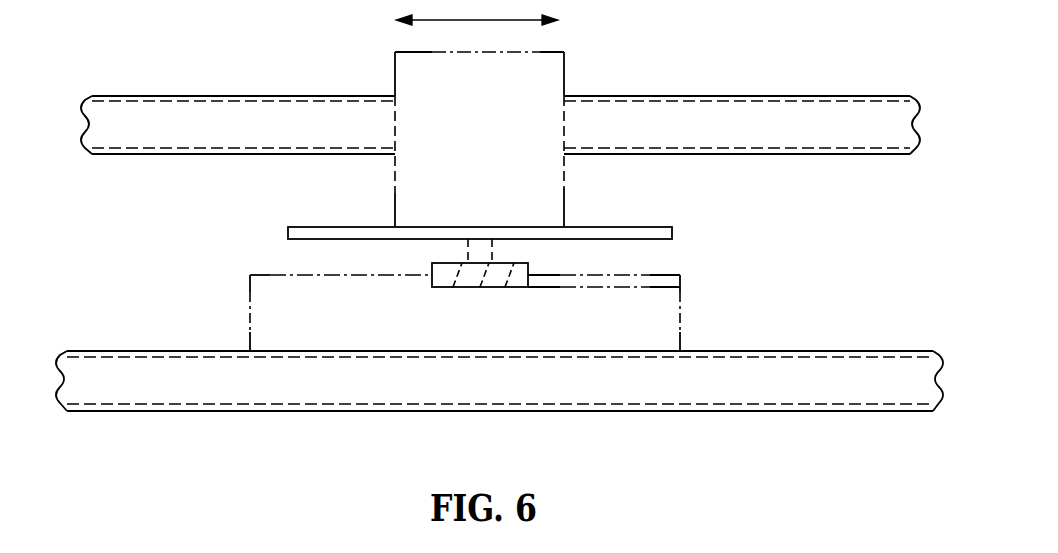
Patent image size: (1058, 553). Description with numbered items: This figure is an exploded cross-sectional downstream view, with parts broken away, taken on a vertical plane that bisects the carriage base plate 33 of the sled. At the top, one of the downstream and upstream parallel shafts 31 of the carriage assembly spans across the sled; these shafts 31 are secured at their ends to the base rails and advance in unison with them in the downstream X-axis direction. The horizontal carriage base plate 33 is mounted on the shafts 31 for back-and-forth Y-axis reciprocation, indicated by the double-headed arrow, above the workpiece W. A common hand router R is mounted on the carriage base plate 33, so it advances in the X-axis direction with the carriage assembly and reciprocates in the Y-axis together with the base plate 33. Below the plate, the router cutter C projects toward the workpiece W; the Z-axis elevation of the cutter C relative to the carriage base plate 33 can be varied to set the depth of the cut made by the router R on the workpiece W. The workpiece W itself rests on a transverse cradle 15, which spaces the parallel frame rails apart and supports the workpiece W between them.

The parallel shaft 31 is at (223, 96).
The hand router R is at (564, 73).
The carriage base plate 33 is at (625, 226).
The router cutter C is at (442, 288).
The workpiece W is at (248, 293).
The transverse cradle 15 is at (127, 352).